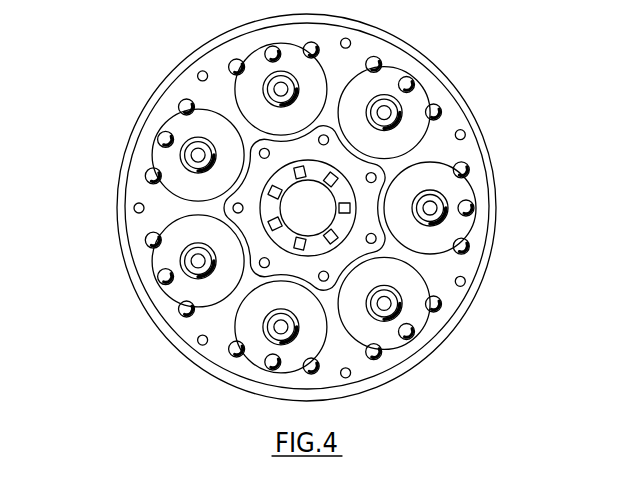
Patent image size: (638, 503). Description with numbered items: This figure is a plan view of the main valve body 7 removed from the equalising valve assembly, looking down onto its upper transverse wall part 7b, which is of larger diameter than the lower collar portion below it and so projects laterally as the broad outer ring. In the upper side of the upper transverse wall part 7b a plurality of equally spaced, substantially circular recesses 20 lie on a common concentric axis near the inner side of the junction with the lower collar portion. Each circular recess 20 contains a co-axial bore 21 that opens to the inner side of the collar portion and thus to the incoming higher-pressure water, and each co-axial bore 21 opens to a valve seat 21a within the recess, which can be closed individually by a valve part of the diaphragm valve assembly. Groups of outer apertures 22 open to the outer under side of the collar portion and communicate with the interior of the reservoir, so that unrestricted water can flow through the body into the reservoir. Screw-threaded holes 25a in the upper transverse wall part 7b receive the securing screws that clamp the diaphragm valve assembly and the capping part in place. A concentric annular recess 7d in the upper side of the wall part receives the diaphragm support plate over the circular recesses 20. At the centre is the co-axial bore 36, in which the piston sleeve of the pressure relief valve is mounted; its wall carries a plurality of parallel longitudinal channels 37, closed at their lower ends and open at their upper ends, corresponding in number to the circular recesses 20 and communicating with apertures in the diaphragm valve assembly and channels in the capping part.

The main valve body 7 is at (454, 75).
The upper transverse wall part 7b is at (160, 203).
The concentric annular recess 7d is at (178, 338).
The circular recess 20 is at (180, 232).
The co-axial bore 21 is at (432, 214).
The valve seat 21a is at (401, 309).
The outer aperture 22 is at (468, 243).
The hole 25a is at (351, 39).
The co-axial bore 36 is at (308, 208).
The channel 37 is at (351, 206).